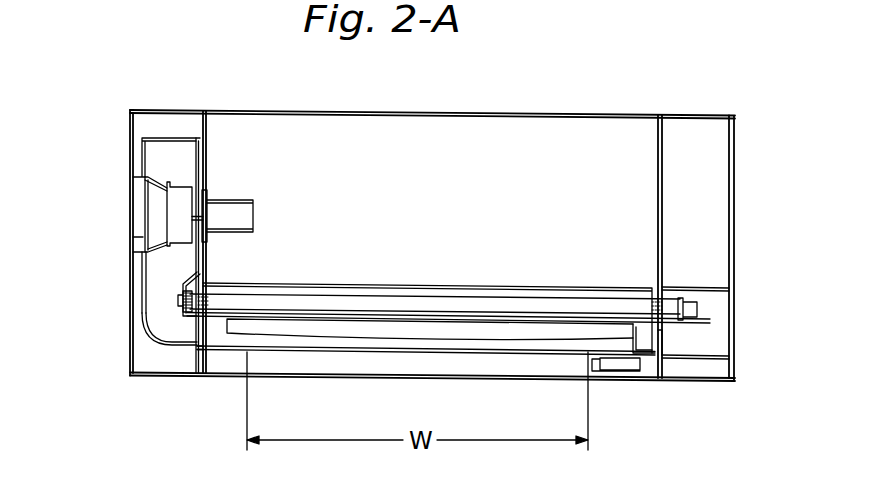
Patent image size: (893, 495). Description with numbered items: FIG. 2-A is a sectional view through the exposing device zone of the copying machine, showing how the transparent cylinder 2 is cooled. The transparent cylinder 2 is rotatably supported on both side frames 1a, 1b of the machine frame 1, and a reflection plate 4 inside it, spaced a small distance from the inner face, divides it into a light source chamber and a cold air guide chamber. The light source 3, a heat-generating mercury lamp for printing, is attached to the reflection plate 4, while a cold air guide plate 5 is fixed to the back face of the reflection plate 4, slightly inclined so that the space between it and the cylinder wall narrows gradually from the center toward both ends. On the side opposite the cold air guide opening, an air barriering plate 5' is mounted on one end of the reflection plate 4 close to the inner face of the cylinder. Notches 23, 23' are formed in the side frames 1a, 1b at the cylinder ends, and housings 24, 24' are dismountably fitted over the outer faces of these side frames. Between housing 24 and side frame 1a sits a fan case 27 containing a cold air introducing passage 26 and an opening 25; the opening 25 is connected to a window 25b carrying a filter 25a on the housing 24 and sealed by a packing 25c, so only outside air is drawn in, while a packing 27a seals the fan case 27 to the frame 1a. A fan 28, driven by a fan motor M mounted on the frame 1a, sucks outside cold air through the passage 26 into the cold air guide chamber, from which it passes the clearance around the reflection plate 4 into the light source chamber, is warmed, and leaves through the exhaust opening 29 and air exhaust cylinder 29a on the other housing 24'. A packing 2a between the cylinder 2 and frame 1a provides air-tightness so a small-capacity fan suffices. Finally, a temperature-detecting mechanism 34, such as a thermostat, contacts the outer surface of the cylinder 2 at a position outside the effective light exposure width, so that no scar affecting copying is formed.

The machine frame 1 is at (429, 112).
The side frame 1a is at (207, 157).
The side frame 1b is at (662, 132).
The transparent cylinder 2 is at (367, 353).
The packing 2a is at (204, 340).
The light source 3 is at (288, 311).
The reflection plate 4 is at (463, 326).
The cold air guide plate 5 is at (448, 367).
The air barriering plate 5' is at (647, 373).
The notch 23 is at (159, 340).
The notch 23' is at (690, 377).
The housing 24 is at (109, 228).
The housing 24' is at (755, 249).
The opening 25 is at (161, 208).
The filter 25a is at (135, 238).
The window 25b is at (133, 182).
The packing 25c is at (135, 173).
The cold air introducing passage 26 is at (155, 320).
The fan case 27 is at (141, 291).
The packing 27a is at (198, 143).
The fan 28 is at (181, 191).
The exhaust opening 29 is at (735, 345).
The air exhaust cylinder 29a is at (705, 290).
The temperature-detecting mechanism 34 is at (610, 367).
The fan motor M is at (255, 206).